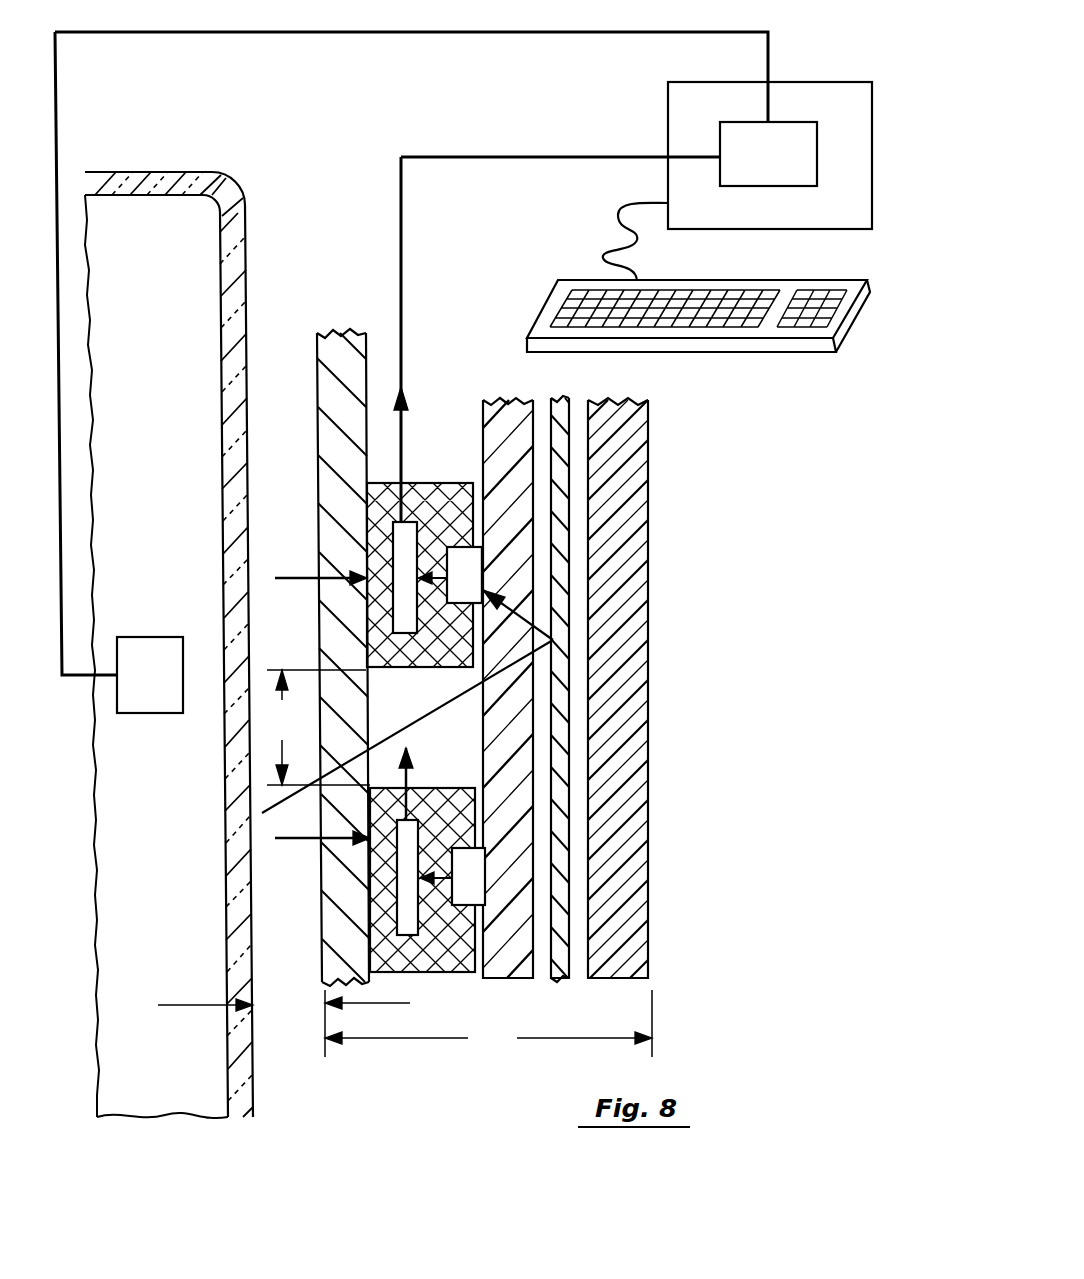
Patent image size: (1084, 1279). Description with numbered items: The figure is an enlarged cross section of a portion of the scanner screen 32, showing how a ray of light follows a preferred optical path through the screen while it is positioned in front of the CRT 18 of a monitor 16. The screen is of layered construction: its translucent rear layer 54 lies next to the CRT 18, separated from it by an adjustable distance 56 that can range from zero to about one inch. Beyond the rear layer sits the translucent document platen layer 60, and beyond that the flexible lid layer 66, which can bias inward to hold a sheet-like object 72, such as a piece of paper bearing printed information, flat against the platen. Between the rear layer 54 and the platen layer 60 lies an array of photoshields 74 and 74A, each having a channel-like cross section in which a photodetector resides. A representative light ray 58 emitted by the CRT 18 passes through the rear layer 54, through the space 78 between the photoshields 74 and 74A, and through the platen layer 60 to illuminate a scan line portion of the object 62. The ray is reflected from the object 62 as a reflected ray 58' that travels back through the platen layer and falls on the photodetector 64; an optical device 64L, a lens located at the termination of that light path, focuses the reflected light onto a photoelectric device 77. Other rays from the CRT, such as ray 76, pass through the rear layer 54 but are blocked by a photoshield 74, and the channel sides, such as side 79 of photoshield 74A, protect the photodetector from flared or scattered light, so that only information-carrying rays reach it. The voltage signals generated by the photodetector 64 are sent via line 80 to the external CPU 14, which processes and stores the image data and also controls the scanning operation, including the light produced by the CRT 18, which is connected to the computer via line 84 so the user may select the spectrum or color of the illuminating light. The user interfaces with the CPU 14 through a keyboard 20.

The CPU 14 is at (668, 115).
The monitor 16 is at (152, 637).
The CRT 18 is at (177, 183).
The keyboard 20 is at (548, 298).
The scanner screen 32 is at (488, 1023).
The rear layer 54 is at (343, 330).
The distance 56 is at (384, 1004).
The light ray 58 is at (407, 726).
The reflected ray 58' is at (606, 589).
The document platen layer 60 is at (505, 398).
The object 62 is at (553, 640).
The photodetector 64 is at (482, 564).
The optical device 64L is at (482, 556).
The lid layer 66 is at (648, 400).
The sheet-like object 72 is at (558, 402).
The photoshield 74 is at (437, 483).
The photoshield 74A is at (370, 897).
The ray 76 is at (307, 550).
The photoelectric device 77 is at (405, 622).
The space 78 is at (318, 727).
The side 79 is at (460, 972).
The line 80 is at (403, 275).
The line 84 is at (338, 32).